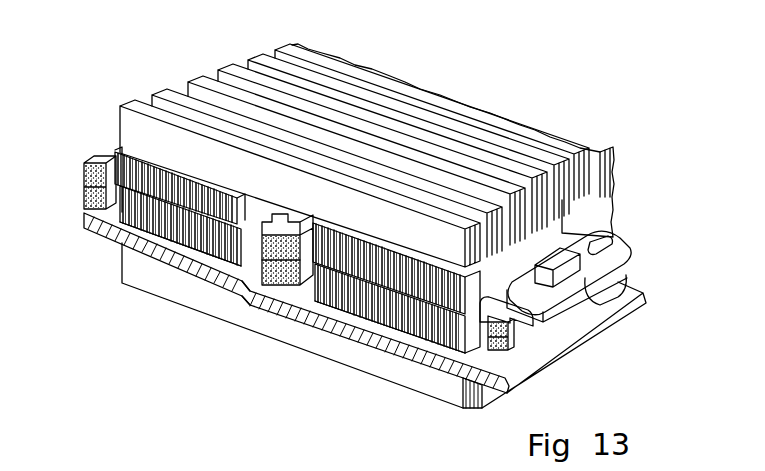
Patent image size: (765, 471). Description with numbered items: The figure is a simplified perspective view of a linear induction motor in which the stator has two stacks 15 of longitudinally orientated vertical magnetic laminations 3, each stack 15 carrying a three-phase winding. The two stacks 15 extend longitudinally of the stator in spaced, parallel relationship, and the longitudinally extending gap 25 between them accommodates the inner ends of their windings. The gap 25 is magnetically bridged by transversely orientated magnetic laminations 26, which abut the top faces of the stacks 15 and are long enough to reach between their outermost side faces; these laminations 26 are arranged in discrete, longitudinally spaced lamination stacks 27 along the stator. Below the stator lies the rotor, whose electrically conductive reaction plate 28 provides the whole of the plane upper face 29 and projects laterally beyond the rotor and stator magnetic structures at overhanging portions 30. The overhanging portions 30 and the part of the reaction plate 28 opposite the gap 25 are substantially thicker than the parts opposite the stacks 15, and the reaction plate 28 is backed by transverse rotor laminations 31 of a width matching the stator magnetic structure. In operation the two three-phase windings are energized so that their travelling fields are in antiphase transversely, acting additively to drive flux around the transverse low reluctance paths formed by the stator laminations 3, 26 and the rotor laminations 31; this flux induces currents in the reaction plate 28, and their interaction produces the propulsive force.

The vertical magnetic laminations 3 is at (180, 225).
The stack 15 is at (200, 262).
The gap 25 is at (286, 222).
The transversely orientated magnetic laminations 26 is at (153, 97).
The lamination stacks 27 is at (189, 73).
The reaction plate 28 is at (406, 362).
The plane upper face 29 is at (273, 300).
The overhanging portions 30 is at (85, 226).
The rotor laminations 31 is at (477, 407).